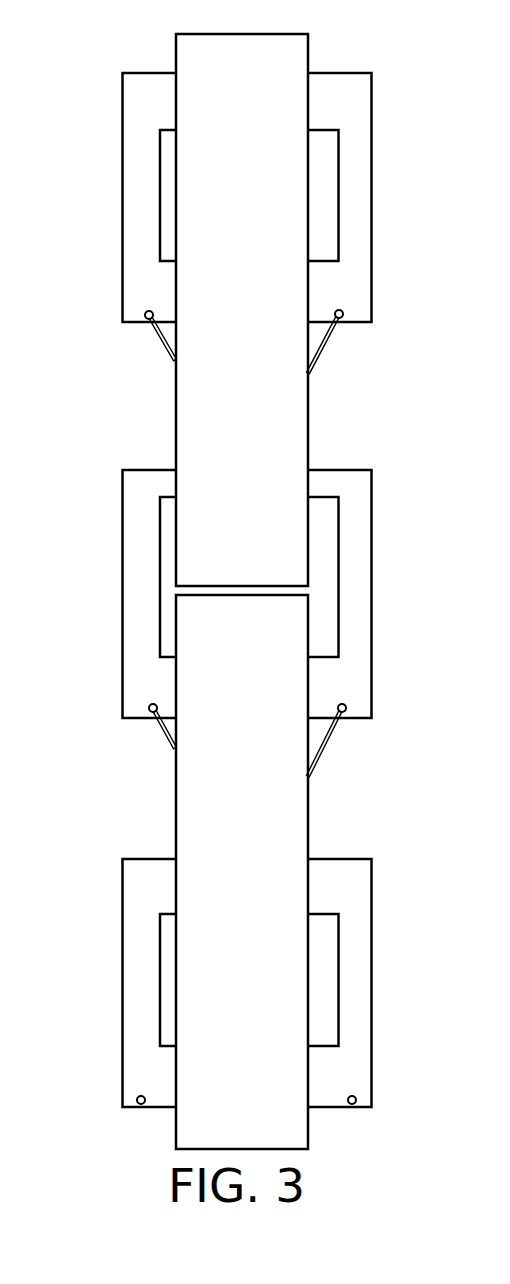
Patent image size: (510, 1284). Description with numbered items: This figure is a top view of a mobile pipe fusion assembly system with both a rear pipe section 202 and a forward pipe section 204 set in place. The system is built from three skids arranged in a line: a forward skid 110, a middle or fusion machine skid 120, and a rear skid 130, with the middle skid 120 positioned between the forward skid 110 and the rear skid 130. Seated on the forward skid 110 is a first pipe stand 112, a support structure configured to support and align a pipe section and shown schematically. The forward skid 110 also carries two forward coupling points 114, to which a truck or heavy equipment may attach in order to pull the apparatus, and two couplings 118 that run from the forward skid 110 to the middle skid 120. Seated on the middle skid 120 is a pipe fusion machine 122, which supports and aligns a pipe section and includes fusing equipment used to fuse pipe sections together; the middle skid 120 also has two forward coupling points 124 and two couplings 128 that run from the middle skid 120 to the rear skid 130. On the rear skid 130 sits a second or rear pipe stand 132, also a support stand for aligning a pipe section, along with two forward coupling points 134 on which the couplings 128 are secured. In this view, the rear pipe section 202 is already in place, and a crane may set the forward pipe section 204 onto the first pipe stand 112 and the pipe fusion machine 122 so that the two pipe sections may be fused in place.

The forward skid 110 is at (132, 942).
The first pipe stand 112 is at (160, 988).
The forward coupling points 114 is at (138, 1097).
The couplings 118 is at (172, 747).
The middle skid 120 is at (132, 523).
The pipe fusion machine 122 is at (175, 600).
The forward coupling points 124 is at (150, 706).
The couplings 128 is at (168, 362).
The rear skid 130 is at (128, 133).
The second pipe stand 132 is at (163, 218).
The forward coupling points 134 is at (146, 313).
The rear pipe section 202 is at (296, 410).
The forward pipe section 204 is at (296, 815).